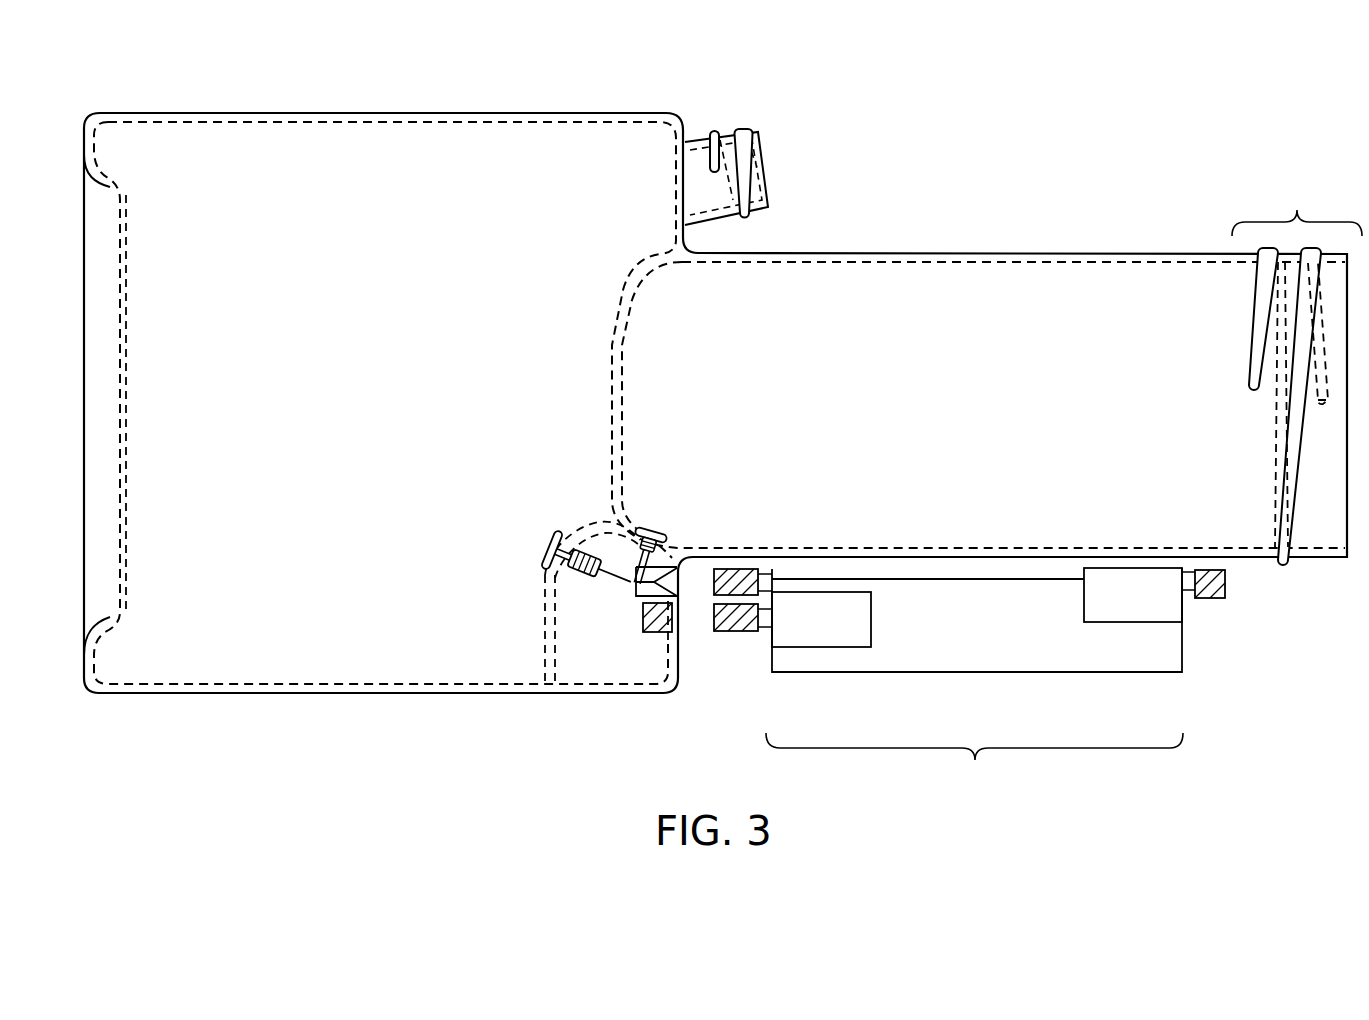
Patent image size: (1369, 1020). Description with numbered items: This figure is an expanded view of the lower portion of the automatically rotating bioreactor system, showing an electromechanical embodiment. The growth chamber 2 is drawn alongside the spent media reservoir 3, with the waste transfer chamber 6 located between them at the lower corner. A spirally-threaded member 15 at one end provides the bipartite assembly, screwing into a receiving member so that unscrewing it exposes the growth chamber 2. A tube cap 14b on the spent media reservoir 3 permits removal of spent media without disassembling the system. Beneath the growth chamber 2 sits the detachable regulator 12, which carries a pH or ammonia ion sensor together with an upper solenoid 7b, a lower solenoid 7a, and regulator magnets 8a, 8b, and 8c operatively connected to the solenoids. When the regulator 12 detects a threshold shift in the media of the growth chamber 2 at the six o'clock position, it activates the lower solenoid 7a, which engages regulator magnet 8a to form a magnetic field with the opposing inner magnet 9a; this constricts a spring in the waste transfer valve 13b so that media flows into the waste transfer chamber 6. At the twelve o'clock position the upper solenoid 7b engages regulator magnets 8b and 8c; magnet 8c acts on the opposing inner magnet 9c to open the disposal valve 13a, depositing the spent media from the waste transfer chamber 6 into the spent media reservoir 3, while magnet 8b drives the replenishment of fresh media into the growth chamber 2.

The growth chamber 2 is at (915, 285).
The spent media reservoir 3 is at (362, 152).
The waste transfer chamber 6 is at (643, 672).
The lower solenoid 7a is at (830, 600).
The upper solenoid 7b is at (1120, 582).
The regulator magnet 8a is at (730, 626).
The regulator magnet 8b is at (1210, 580).
The regulator magnet 8c is at (735, 581).
The inner magnet 9a is at (663, 627).
The inner magnet 9c is at (630, 583).
The detachable regulator 12 is at (974, 682).
The disposal valve 13a is at (580, 540).
The waste transfer valve 13b is at (646, 530).
The tube cap 14b is at (705, 133).
The spirally-threaded member 15 is at (1297, 373).